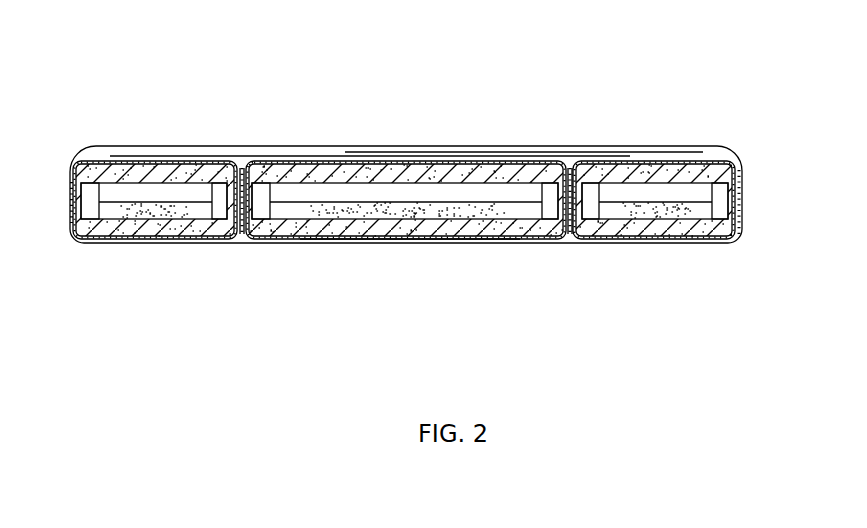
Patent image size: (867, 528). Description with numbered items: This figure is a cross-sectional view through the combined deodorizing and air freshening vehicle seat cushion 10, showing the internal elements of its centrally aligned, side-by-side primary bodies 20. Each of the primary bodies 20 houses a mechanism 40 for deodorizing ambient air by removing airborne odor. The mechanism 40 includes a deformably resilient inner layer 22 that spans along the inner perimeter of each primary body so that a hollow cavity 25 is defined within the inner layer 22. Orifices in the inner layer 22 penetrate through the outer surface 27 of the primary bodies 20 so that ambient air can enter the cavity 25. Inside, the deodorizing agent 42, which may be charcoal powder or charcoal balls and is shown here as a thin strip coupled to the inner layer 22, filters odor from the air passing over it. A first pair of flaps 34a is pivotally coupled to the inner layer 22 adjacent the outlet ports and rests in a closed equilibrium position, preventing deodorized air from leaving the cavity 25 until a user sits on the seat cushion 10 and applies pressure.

The combined deodorizing and air freshening vehicle seat cushion 10 is at (100, 98).
The primary bodies 20 is at (155, 193).
The inner layer 22 is at (440, 172).
The hollow cavity 25 is at (298, 192).
The outer surface 27 is at (185, 175).
The first pair of flaps 34a is at (520, 200).
The mechanism for deodorizing ambient air 40 is at (410, 258).
The deodorizing agent 42 is at (642, 210).